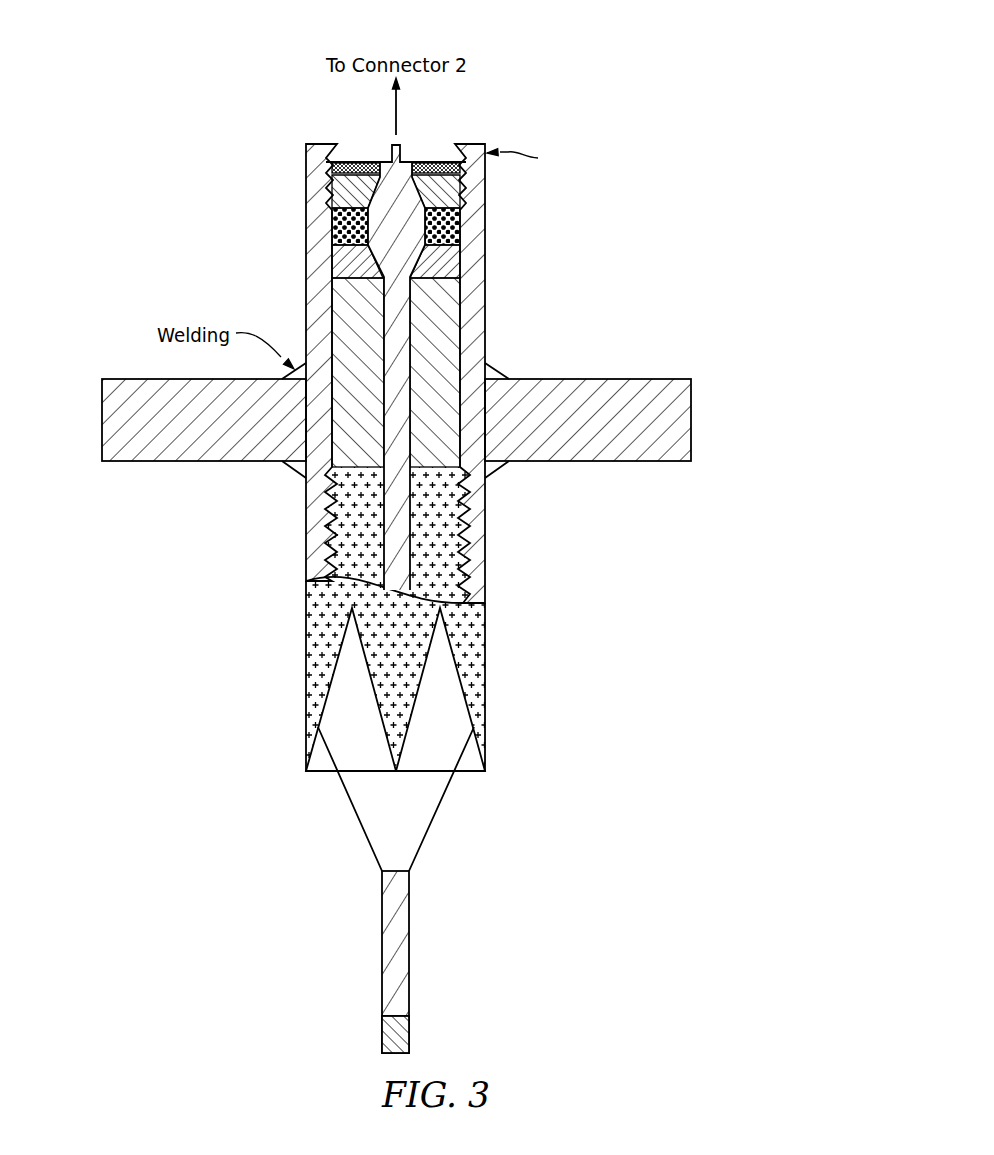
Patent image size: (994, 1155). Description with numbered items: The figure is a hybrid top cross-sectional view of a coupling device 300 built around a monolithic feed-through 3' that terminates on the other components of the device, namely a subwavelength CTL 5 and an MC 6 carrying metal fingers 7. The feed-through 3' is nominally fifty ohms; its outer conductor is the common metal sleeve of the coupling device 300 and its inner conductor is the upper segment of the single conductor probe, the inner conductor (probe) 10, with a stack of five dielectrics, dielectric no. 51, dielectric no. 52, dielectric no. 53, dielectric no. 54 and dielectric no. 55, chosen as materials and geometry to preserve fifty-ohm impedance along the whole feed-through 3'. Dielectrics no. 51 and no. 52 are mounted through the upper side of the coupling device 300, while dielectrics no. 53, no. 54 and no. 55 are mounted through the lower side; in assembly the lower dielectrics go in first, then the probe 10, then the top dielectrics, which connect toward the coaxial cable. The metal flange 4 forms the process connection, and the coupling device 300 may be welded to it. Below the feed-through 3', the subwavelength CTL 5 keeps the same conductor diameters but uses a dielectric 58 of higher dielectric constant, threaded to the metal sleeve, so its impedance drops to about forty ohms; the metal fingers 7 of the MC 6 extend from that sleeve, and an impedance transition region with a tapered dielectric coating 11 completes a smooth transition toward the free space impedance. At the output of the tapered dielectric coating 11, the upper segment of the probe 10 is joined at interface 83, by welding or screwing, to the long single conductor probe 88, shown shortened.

The coupling device 300 is at (119, 30).
The monolithic feed-through 3' is at (527, 373).
The flange 4 is at (682, 410).
The subwavelength CTL 5 is at (233, 467).
The MC 6 is at (232, 583).
The metal fingers 7 is at (490, 675).
The inner conductor (probe) 10 is at (414, 321).
The tapered dielectric coating 11 is at (437, 808).
The dielectric no. 51 is at (433, 148).
The dielectric no. 52 is at (448, 184).
The dielectric no. 53 is at (448, 223).
The dielectric no. 54 is at (448, 257).
The dielectric no. 55 is at (448, 295).
The dielectric 58 is at (450, 655).
The interface 83 is at (382, 1016).
The long single conductor probe 88 is at (413, 1040).